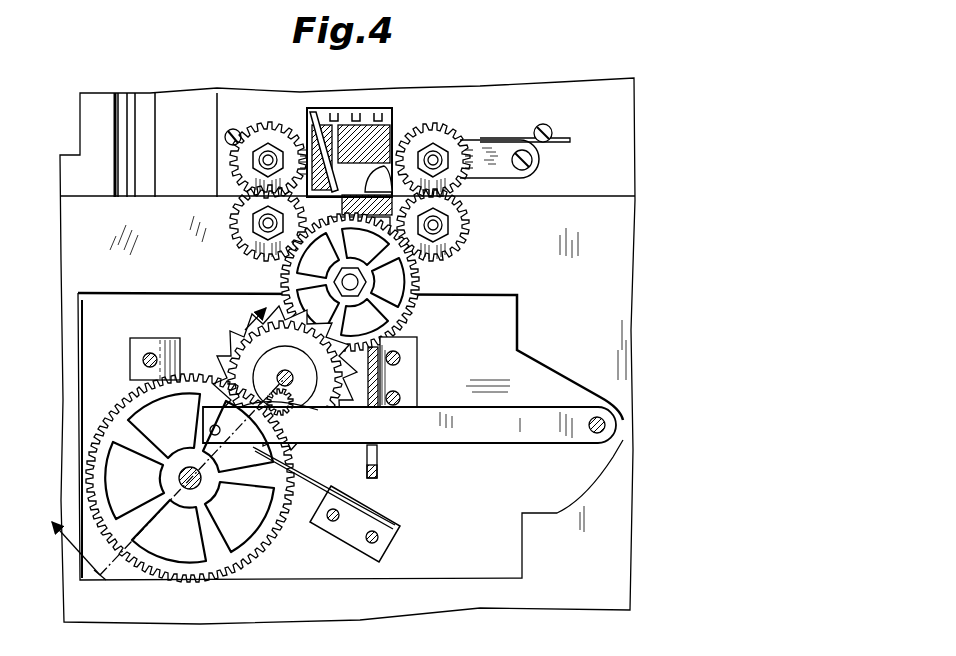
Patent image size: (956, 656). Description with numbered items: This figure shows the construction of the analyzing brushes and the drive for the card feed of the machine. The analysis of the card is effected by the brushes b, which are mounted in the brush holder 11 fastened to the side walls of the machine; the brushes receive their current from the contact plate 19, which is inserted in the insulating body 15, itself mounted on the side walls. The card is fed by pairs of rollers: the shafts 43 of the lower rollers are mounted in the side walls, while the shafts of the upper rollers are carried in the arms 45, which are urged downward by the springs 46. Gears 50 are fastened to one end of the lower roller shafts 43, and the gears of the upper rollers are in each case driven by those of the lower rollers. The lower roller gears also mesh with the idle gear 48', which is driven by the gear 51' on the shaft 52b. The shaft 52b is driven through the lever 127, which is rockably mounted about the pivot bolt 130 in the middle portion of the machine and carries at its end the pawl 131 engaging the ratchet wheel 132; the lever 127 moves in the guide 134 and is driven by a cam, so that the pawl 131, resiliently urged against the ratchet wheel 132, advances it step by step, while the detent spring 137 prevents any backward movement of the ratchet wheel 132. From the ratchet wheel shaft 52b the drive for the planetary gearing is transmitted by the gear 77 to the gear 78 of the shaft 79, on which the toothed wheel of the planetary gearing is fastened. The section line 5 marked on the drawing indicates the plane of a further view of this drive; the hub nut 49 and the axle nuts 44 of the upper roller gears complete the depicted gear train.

The section line 5 is at (156, 440).
The brush holder 11 is at (343, 120).
The brushes b is at (313, 110).
The insulating body 15 is at (395, 207).
The contact plate 19 is at (386, 187).
The shafts of the lower rollers 43 is at (258, 223).
The axle nut of upper gear 44 is at (258, 160).
The arms 45 is at (540, 156).
The springs 46 is at (566, 138).
The idle gear 48' is at (381, 282).
The hub nut 49 is at (362, 281).
The gears 50 is at (255, 130).
The gear 51' is at (283, 378).
The shaft 52b is at (280, 375).
The gear 77 is at (281, 410).
The gear 78 is at (147, 555).
The shaft 79 is at (188, 487).
The lever 127 is at (418, 423).
The pivot bolt 130 is at (607, 430).
The pawl 131 is at (217, 388).
The ratchet wheel 132 is at (310, 348).
The guide 134 is at (380, 370).
The detent spring 137 is at (320, 490).